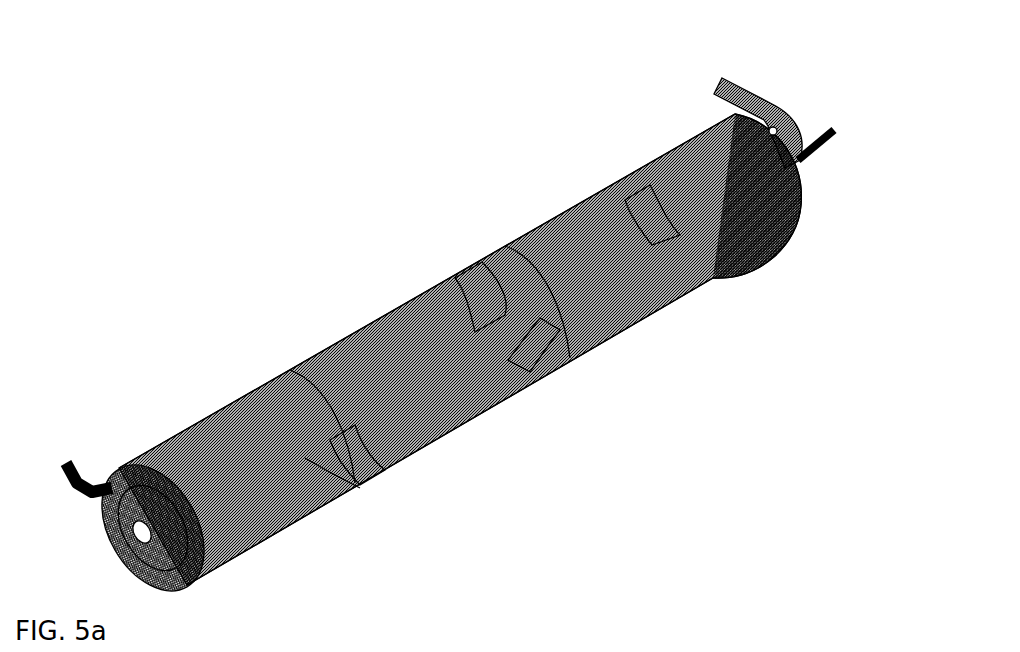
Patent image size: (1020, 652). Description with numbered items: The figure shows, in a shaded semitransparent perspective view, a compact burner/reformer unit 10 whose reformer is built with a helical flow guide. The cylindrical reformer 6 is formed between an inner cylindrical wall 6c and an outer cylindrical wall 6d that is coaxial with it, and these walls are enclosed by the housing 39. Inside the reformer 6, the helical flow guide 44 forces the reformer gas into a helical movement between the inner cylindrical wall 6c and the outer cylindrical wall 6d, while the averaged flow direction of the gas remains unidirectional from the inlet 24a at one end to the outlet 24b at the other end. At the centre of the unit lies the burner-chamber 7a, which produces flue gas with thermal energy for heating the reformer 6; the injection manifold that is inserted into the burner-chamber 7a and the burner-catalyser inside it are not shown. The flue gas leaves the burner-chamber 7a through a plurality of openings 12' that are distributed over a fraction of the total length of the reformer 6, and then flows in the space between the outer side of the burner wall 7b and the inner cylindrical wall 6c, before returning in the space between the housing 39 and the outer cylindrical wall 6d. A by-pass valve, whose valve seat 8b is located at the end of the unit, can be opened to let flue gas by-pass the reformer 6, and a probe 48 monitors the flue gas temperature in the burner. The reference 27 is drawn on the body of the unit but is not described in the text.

The burner/reformer unit 10 is at (333, 200).
The reformer 6 is at (427, 349).
The inner cylindrical wall 6c is at (368, 488).
The outer cylindrical wall 6d is at (482, 261).
The burner-chamber 7a is at (118, 545).
The burner wall 7b is at (356, 518).
The valve seat 8b is at (714, 159).
The openings 12' is at (667, 266).
The inlet 24a is at (67, 432).
The outlet 24b is at (758, 91).
The recess 27 is at (534, 397).
The housing 39 is at (505, 244).
The helical flow guide 44 is at (308, 377).
The probe 48 is at (832, 200).